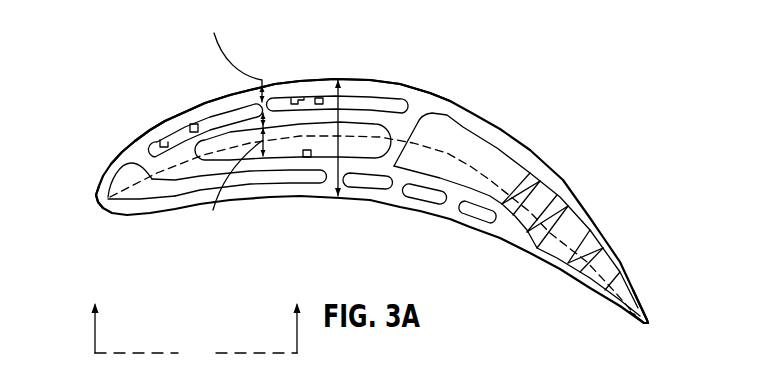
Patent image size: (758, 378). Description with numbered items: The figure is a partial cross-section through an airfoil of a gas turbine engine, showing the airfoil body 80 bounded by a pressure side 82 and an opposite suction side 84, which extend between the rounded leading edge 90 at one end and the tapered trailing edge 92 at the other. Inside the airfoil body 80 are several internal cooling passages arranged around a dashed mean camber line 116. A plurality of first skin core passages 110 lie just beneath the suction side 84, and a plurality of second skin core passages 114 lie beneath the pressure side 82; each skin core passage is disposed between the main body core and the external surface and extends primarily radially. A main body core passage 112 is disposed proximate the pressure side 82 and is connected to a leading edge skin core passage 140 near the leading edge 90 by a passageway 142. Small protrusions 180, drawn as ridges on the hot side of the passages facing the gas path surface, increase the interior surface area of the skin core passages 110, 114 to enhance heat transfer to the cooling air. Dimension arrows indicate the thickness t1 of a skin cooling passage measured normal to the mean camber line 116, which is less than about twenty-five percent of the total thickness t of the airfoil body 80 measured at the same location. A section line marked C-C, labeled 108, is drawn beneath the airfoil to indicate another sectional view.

The airfoil body 80 is at (533, 147).
The pressure side 82 is at (346, 198).
The suction side 84 is at (290, 81).
The leading edge 90 is at (95, 198).
The trailing edge 92 is at (649, 323).
The first skin core passages 110 is at (210, 114).
The main body core passage 112 is at (172, 202).
The second skin core passages 114 is at (287, 162).
The mean camber line 116 is at (476, 170).
The leading edge skin core passage 140 is at (110, 209).
The passageway 142 is at (153, 212).
The protrusion 180 is at (160, 140).
The section line C-C 108 is at (197, 325).
The skin cooling passage thickness t1 is at (235, 125).
The total thickness of the airfoil body t is at (360, 134).